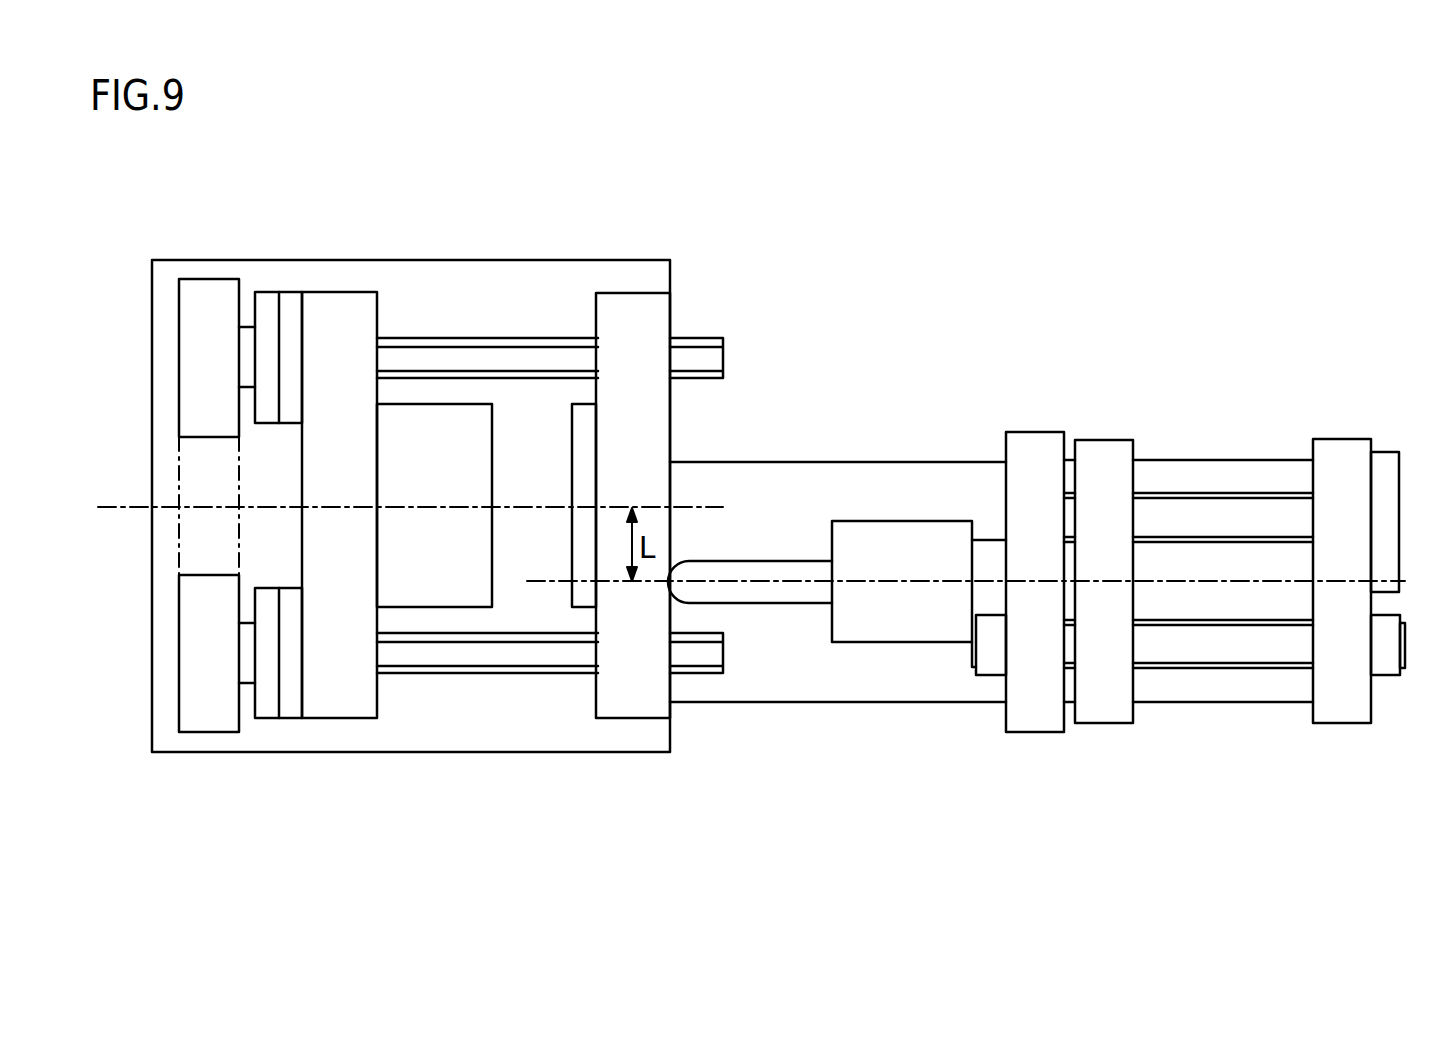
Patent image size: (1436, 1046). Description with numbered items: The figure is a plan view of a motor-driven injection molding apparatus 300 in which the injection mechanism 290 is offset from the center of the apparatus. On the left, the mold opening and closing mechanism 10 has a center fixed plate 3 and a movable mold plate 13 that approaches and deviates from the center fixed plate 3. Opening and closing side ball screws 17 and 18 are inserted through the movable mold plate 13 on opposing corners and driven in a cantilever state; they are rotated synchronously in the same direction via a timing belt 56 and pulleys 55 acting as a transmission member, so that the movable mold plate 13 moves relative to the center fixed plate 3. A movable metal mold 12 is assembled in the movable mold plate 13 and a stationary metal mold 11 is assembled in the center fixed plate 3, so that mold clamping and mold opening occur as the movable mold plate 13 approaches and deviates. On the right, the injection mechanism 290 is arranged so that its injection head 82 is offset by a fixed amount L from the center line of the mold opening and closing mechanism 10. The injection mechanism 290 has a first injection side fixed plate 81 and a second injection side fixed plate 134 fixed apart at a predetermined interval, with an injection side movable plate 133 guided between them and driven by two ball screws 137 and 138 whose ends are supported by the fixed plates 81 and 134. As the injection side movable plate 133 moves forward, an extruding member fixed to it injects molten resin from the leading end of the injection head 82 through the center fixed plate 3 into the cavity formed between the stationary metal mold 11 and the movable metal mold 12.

The mold opening and closing mechanism 10 is at (433, 210).
The center fixed plate 3 is at (630, 308).
The movable mold plate 13 is at (348, 300).
The opening and closing side ball screw 17 is at (460, 352).
The opening and closing side ball screw 18 is at (478, 655).
The movable metal mold 12 is at (470, 477).
The stationary metal mold 11 is at (580, 532).
The pulley 55 is at (190, 318).
The timing belt 56 is at (185, 465).
The injection head 82 is at (733, 565).
The injection mechanism 290 is at (929, 495).
The motor-driven injection molding apparatus 300 is at (1042, 268).
The first injection side fixed plate 81 is at (1035, 440).
The injection side movable plate 133 is at (1098, 450).
The second injection side fixed plate 134 is at (1340, 447).
The ball screw 137 is at (1170, 512).
The ball screw 138 is at (1178, 655).